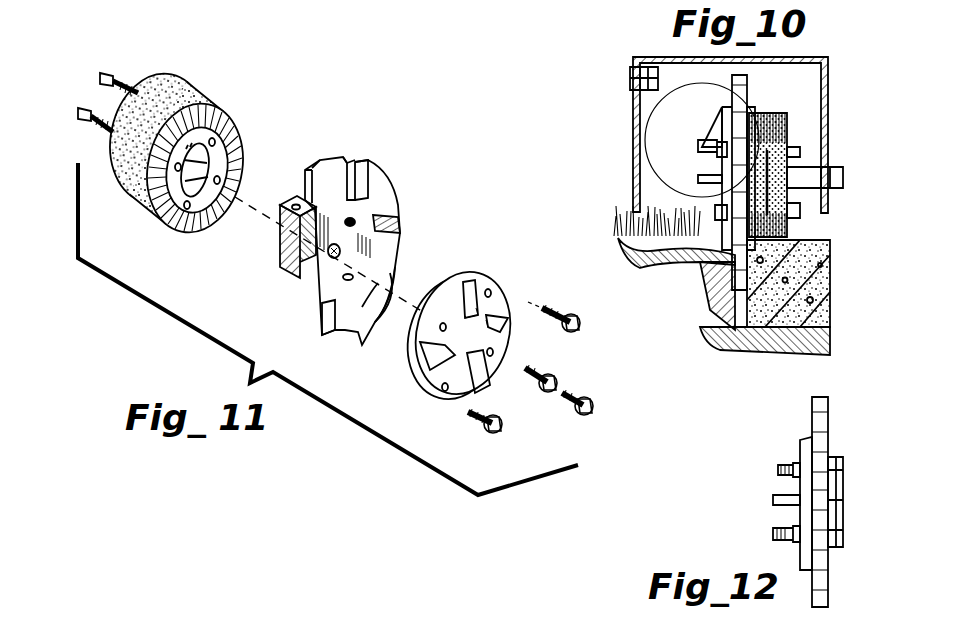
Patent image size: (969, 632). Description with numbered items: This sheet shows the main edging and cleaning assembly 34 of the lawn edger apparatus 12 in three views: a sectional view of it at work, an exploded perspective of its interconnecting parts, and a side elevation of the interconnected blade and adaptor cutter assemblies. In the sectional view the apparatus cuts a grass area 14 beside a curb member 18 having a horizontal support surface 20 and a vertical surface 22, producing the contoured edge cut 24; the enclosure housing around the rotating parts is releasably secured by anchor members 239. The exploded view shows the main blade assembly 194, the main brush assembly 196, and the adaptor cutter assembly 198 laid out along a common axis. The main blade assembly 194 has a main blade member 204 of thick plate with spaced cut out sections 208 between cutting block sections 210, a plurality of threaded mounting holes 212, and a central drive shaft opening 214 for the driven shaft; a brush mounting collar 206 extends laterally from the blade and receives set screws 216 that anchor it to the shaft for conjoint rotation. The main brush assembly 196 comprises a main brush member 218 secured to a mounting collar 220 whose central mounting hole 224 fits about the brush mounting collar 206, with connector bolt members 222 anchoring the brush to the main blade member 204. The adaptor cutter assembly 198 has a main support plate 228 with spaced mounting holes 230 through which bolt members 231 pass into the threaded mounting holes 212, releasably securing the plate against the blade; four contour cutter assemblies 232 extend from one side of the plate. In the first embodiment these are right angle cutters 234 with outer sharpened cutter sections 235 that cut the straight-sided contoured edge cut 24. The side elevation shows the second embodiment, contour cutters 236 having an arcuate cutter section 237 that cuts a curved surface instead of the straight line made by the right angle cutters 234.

In FIG. 10, the lawn edger apparatus 12 is at (576, 57).
In FIG. 10, the grass area 14 is at (613, 222).
In FIG. 10, the curb member 18 is at (760, 308).
In FIG. 10, the horizontal support surface 20 is at (833, 225).
In FIG. 10, the vertical surface 22 is at (733, 283).
In FIG. 10, the contoured edge cut 24 is at (707, 240).
In FIG. 11, the main edging and cleaning assembly 34 is at (440, 118).
In FIG. 11, the main blade assembly 194 is at (395, 178).
In FIG. 11, the main brush assembly 196 is at (240, 162).
In FIG. 11, the adaptor cutter assembly 198 is at (515, 292).
In FIG. 11, the main blade member 204 is at (320, 290).
In FIG. 11, the brush mounting collar 206 is at (278, 258).
In FIG. 11, the cut out sections 208 is at (318, 160).
In FIG. 11, the cutting block sections 210 is at (352, 323).
In FIG. 11, the threaded mounting holes 212 is at (352, 220).
In FIG. 11, the central drive shaft opening 214 is at (300, 297).
In FIG. 11, the set screws 216 is at (293, 207).
In FIG. 10, the set screws 216 is at (732, 162).
In FIG. 11, the main brush member 218 is at (173, 92).
In FIG. 11, the mounting collar 220 is at (197, 210).
In FIG. 11, the connector bolt members 222 is at (108, 110).
In FIG. 11, the central mounting hole 224 is at (213, 167).
In FIG. 11, the main support plate 228 is at (435, 350).
In FIG. 11, the spaced mounting holes 230 is at (407, 368).
In FIG. 11, the bolt members 231 is at (490, 426).
In FIG. 11, the contour cutter assemblies 232 is at (433, 376).
In FIG. 12, the contour cutter assemblies 232 is at (798, 470).
In FIG. 11, the right angle cutters 234 is at (490, 363).
In FIG. 10, the right angle cutters 234 is at (710, 138).
In FIG. 10, the outer sharpened cutter sections 235 is at (708, 147).
In FIG. 12, the contour cutters 236 is at (775, 508).
In FIG. 12, the arcuate cutter section 237 is at (782, 465).
In FIG. 10, the anchor members 239 is at (630, 72).